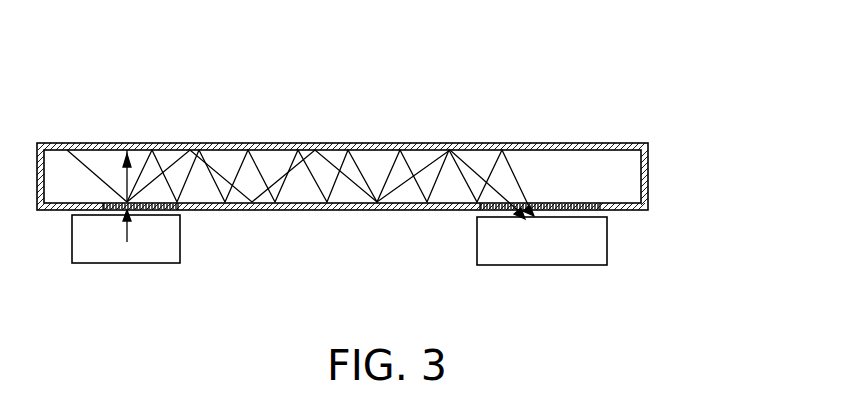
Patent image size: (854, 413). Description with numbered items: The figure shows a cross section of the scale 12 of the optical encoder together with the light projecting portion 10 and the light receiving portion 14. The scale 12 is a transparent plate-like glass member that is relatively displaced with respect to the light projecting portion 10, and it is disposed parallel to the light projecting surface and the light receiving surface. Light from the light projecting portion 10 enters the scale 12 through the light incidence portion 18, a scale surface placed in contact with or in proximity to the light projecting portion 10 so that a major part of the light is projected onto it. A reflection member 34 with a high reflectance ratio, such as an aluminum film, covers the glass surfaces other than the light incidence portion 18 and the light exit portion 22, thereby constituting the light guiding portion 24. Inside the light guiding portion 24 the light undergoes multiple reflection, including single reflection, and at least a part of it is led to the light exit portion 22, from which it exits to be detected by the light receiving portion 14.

The light projecting portion 10 is at (105, 264).
The scale 12 is at (470, 148).
The light receiving portion 14 is at (593, 265).
The light incidence portion 18 is at (152, 208).
The light exit portion 22 is at (548, 210).
The light guiding portion 24 is at (273, 165).
The reflection member 34 is at (650, 172).